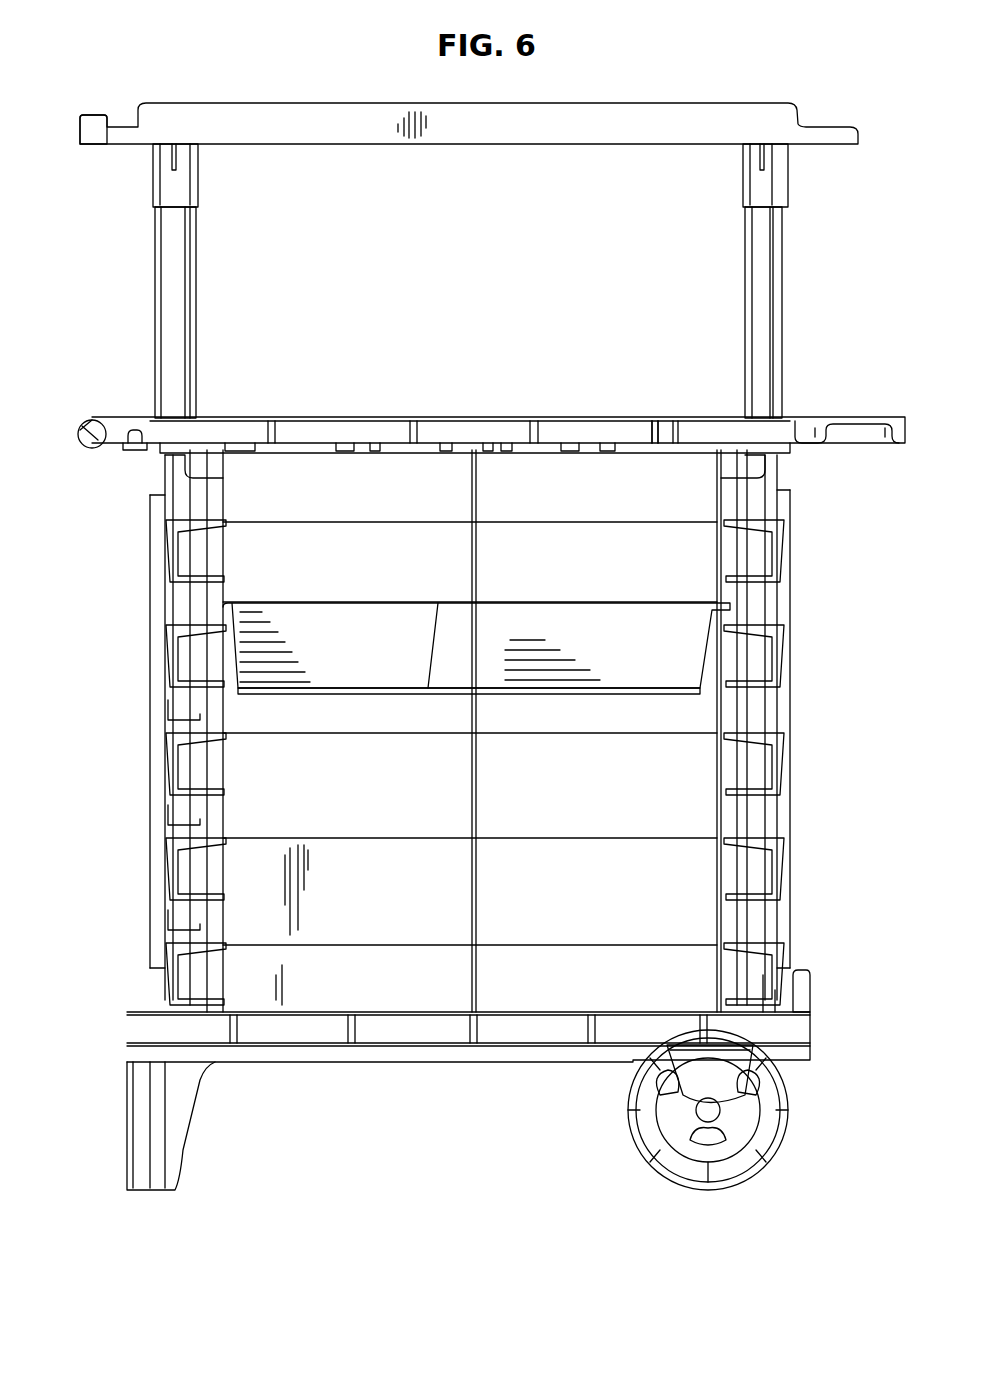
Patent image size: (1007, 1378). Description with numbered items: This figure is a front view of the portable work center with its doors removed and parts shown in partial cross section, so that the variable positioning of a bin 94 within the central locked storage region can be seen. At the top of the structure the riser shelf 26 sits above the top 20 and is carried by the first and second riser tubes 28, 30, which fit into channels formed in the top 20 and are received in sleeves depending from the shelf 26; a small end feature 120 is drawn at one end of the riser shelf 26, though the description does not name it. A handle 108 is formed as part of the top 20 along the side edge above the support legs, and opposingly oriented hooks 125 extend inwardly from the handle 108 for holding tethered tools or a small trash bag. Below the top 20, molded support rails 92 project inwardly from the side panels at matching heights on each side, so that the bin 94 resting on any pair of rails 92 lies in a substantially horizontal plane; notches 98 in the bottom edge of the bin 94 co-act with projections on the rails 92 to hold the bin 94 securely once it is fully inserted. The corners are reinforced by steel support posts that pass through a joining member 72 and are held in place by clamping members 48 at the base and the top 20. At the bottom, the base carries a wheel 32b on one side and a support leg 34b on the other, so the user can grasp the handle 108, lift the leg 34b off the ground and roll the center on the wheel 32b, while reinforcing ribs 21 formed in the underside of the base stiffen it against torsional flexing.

The top 20 is at (566, 418).
The reinforcing ribs 21 is at (655, 440).
The riser shelf 26 is at (572, 100).
The first riser tube 28 is at (164, 283).
The second riser tube 30 is at (772, 355).
The wheel 32b is at (785, 1142).
The support leg 34b is at (190, 1120).
The clamping member 48 is at (793, 1002).
The joining member 72 is at (791, 560).
The support rails 92 is at (213, 907).
The bin 94 is at (275, 612).
The notches 98 is at (215, 626).
The handle 108 is at (78, 428).
The lid tab 120 is at (108, 116).
The hooks 125 is at (136, 430).